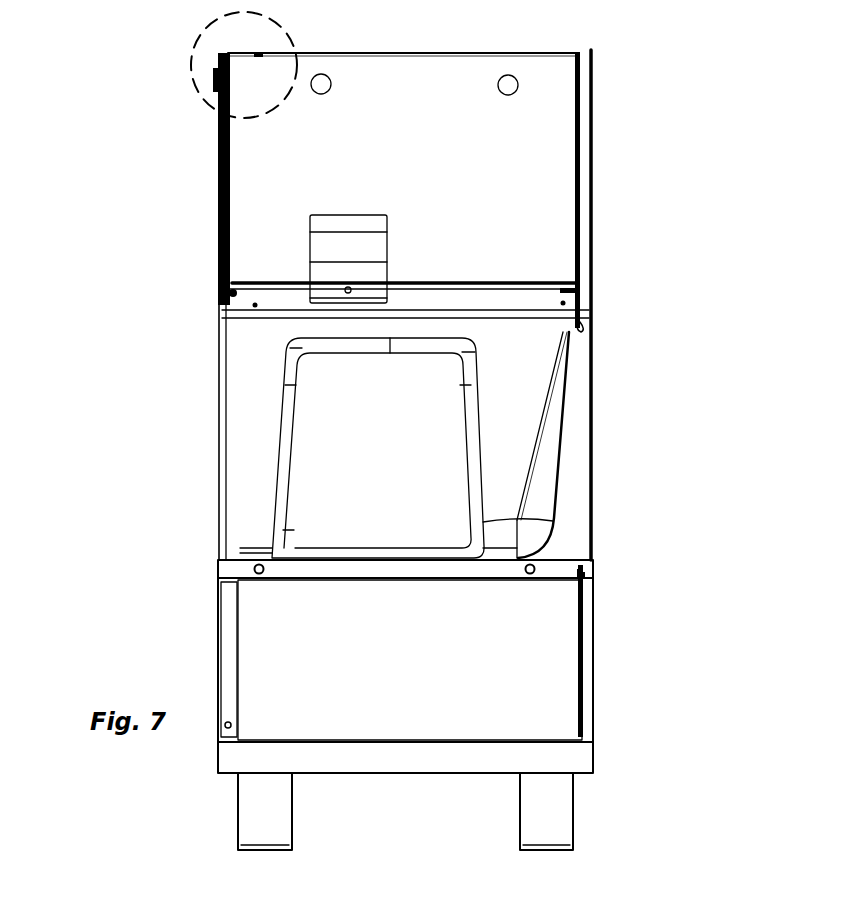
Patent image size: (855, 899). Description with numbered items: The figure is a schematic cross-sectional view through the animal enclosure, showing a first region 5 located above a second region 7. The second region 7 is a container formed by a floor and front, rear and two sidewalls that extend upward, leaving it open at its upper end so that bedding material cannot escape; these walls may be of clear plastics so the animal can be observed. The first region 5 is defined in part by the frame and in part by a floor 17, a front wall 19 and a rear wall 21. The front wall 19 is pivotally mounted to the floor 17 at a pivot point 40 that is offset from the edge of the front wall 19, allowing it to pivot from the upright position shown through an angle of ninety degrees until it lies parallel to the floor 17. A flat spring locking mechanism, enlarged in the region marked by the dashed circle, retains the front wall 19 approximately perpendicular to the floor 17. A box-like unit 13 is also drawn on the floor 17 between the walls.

The first region 5 is at (562, 247).
The second region 7 is at (340, 479).
The dispensing unit / box 13 is at (363, 196).
The floor 17 is at (515, 293).
The front wall 19 is at (220, 192).
The rear wall 21 is at (578, 182).
The pivot point 40 is at (188, 290).